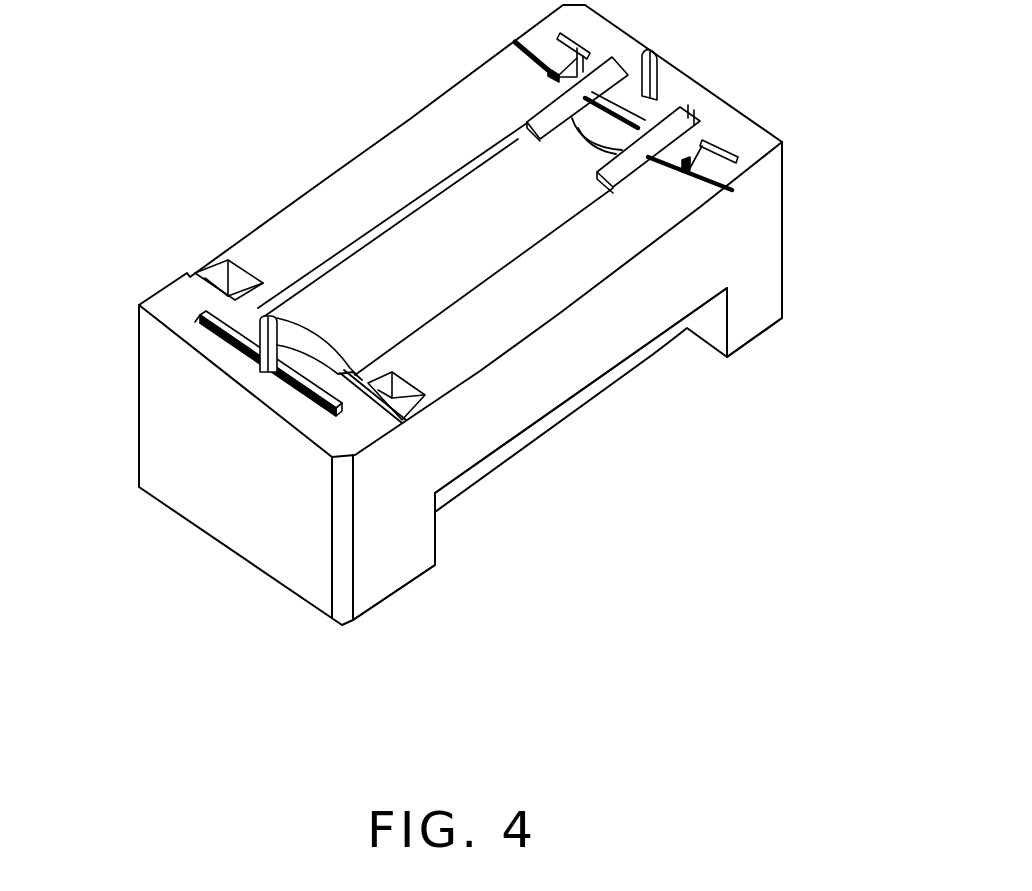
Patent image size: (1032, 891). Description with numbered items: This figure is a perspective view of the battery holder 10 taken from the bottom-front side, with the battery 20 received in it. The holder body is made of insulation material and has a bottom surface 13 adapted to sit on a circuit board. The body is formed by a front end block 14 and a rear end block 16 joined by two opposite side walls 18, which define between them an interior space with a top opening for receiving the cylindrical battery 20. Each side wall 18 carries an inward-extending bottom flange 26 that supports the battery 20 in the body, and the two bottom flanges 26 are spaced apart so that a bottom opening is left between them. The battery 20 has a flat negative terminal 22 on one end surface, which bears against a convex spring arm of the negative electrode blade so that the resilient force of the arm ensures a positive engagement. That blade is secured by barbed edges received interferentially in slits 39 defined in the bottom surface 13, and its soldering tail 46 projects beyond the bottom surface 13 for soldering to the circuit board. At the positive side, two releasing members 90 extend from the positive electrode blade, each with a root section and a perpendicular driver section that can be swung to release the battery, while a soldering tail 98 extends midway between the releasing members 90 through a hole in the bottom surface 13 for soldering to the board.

The battery holder 10 is at (280, 585).
The bottom surface 13 is at (725, 123).
The front end block 14 is at (383, 563).
The rear end block 16 is at (753, 313).
The side wall 18 is at (472, 437).
The battery 20 is at (513, 208).
The negative terminal 22 is at (303, 375).
The bottom flange 26 is at (383, 177).
The slit 39 is at (202, 322).
The soldering tail 46 is at (262, 339).
The releasing member 90 is at (553, 110).
The soldering tail 98 is at (663, 62).